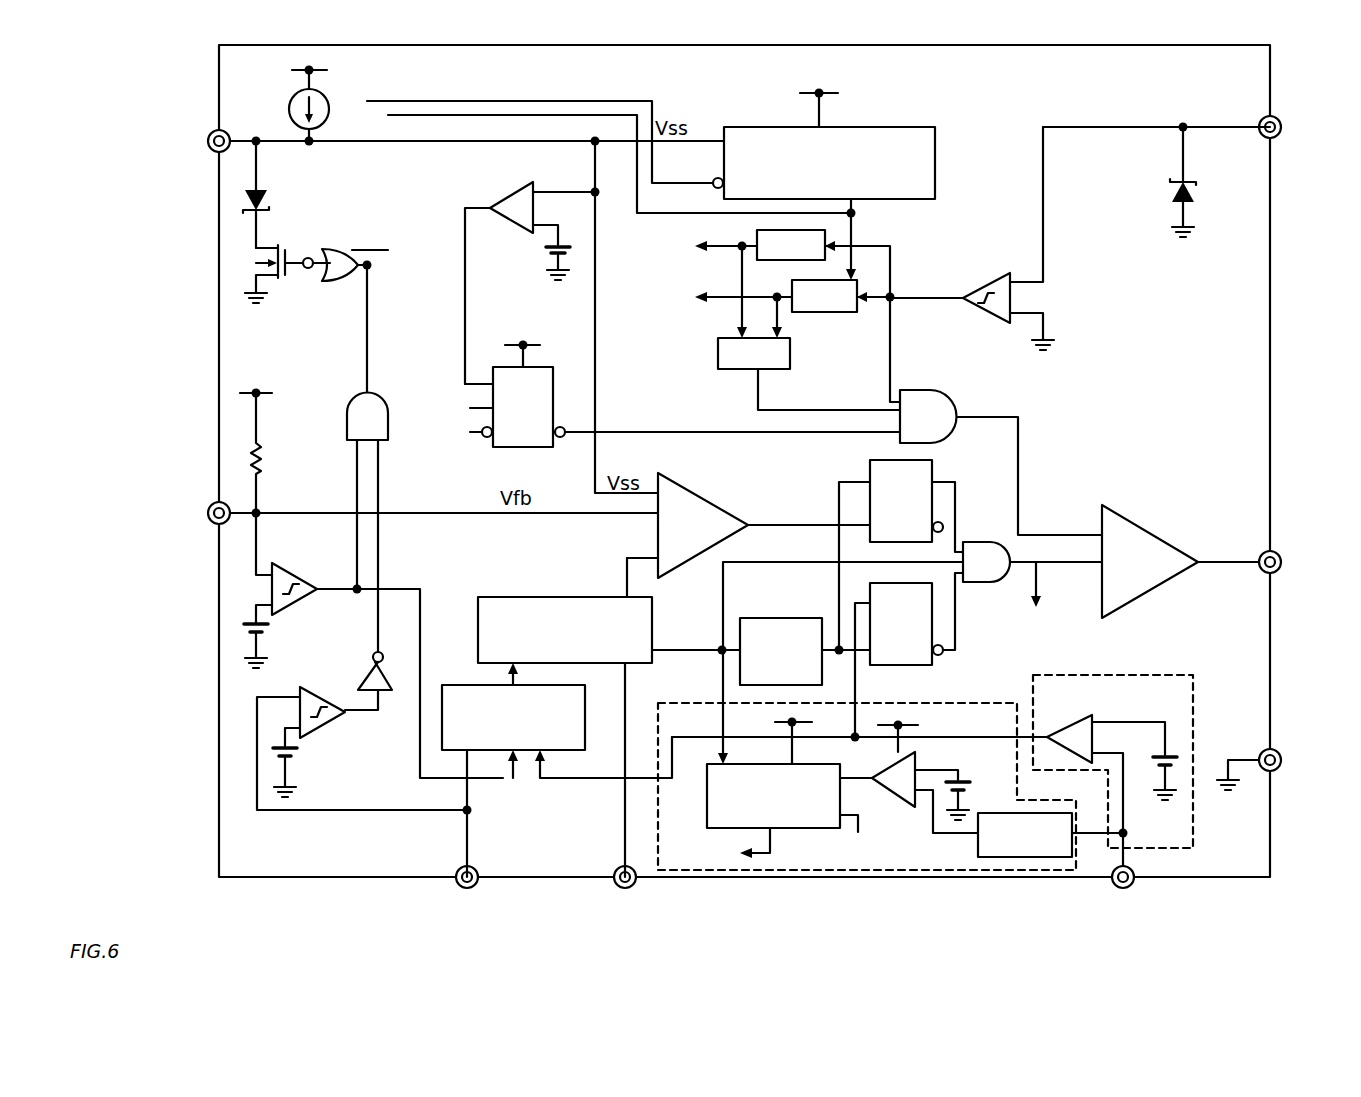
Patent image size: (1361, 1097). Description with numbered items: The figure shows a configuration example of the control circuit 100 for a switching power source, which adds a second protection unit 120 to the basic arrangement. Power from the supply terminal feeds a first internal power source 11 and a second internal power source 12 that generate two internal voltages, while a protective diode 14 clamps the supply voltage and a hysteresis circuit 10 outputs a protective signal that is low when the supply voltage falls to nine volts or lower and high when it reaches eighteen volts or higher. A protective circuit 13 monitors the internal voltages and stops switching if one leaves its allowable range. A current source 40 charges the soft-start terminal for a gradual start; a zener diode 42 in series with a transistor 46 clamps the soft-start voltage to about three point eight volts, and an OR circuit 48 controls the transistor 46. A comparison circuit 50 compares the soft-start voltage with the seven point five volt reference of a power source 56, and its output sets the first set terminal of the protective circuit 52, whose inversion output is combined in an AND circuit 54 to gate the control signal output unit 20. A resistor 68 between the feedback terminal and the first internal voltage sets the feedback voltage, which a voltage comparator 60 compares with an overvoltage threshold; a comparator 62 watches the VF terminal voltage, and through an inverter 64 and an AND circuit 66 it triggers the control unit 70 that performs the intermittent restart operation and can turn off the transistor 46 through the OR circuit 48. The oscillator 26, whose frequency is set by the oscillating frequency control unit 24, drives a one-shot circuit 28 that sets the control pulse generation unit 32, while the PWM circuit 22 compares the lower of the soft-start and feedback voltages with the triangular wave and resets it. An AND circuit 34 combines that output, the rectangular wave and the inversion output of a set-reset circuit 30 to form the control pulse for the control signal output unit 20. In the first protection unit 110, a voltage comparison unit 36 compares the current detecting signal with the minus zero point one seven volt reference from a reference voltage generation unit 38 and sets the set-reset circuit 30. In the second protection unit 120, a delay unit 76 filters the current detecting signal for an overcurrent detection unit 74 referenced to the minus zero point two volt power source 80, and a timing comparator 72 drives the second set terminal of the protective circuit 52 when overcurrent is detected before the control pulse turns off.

The control circuit 100 is at (738, 941).
The current source 40 is at (330, 103).
The zener diode 42 is at (262, 195).
The transistor 46 is at (286, 246).
The OR circuit 48 is at (345, 283).
The comparison circuit 50 is at (512, 214).
The power source 56 is at (560, 244).
The hiccup control unit 70 is at (935, 127).
The internal power source 12 is at (785, 260).
The internal power source 11 is at (835, 312).
The hysteresis circuit 10 is at (1000, 326).
The protective diode 14 is at (1176, 190).
The protective circuit 13 is at (735, 369).
The protective circuit 52 is at (553, 372).
The AND circuit 54 is at (957, 400).
The AND circuit 66 is at (388, 400).
The resistor 68 is at (262, 448).
The voltage comparator 60 is at (285, 566).
The inverter 64 is at (390, 675).
The hiccup comparator 62 is at (318, 690).
The oscillator 26 is at (555, 597).
The oscillating frequency control unit 24 is at (585, 715).
The PWM circuit 22 is at (680, 580).
The control pulse generation unit 32 is at (870, 462).
The set-reset circuit 30 is at (905, 665).
The AND circuit 34 is at (995, 545).
The one-shot circuit 28 is at (775, 618).
The control signal output unit 20 is at (1102, 612).
The second protection unit 120 is at (968, 703).
The first protection unit 110 is at (1185, 675).
The voltage comparison unit 36 is at (1092, 718).
The reference voltage generation unit 38 is at (1150, 768).
The timing comparator 72 is at (707, 810).
The overcurrent detection unit 74 is at (900, 808).
The power source 80 is at (966, 795).
The delay unit 76 is at (978, 850).